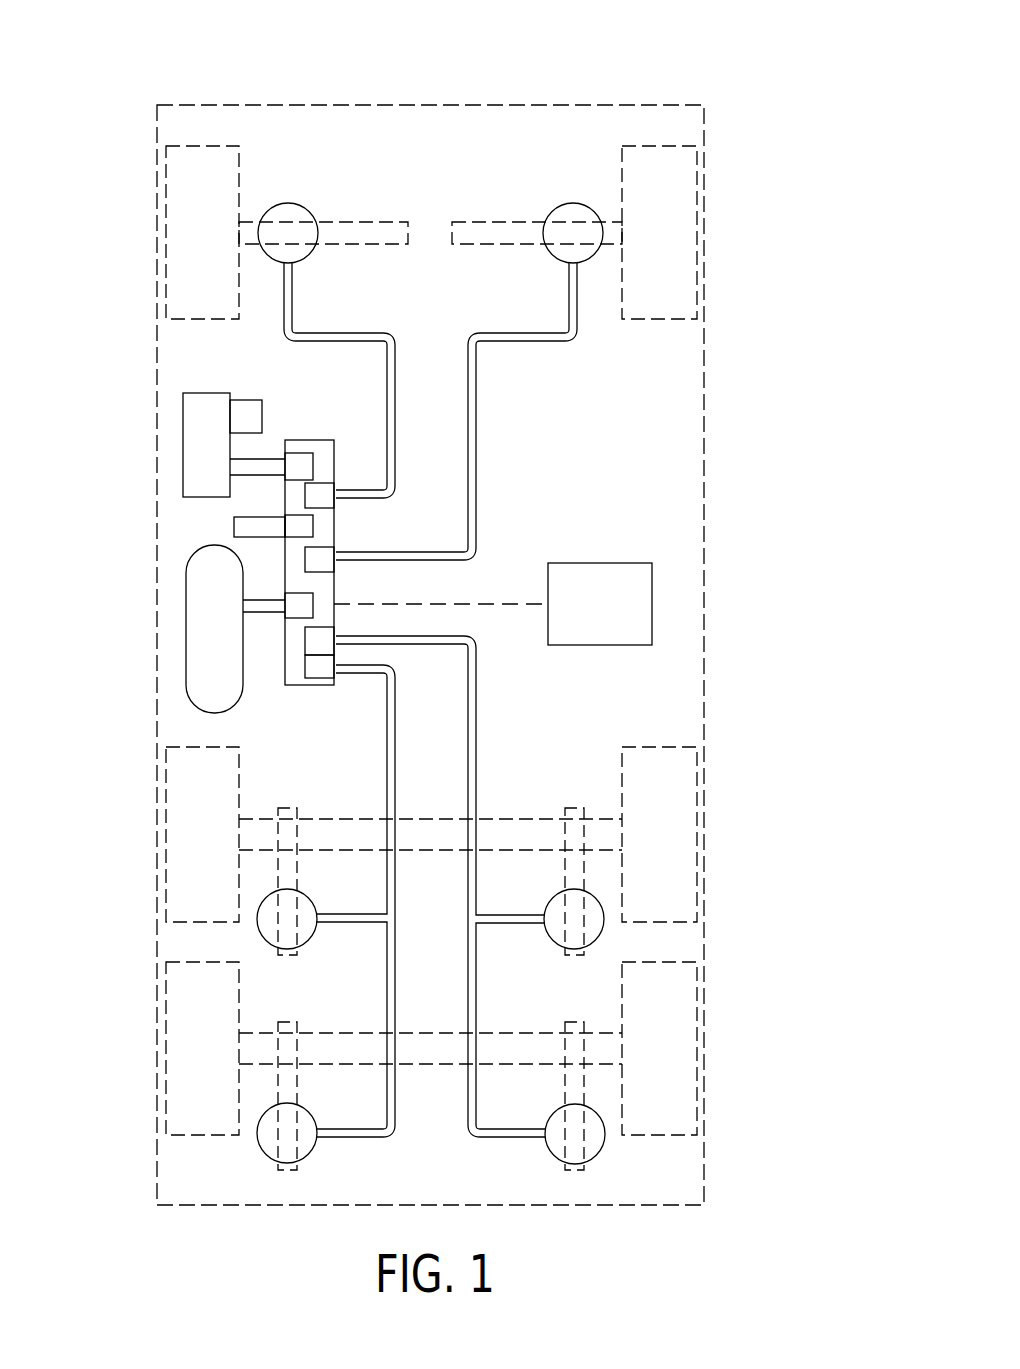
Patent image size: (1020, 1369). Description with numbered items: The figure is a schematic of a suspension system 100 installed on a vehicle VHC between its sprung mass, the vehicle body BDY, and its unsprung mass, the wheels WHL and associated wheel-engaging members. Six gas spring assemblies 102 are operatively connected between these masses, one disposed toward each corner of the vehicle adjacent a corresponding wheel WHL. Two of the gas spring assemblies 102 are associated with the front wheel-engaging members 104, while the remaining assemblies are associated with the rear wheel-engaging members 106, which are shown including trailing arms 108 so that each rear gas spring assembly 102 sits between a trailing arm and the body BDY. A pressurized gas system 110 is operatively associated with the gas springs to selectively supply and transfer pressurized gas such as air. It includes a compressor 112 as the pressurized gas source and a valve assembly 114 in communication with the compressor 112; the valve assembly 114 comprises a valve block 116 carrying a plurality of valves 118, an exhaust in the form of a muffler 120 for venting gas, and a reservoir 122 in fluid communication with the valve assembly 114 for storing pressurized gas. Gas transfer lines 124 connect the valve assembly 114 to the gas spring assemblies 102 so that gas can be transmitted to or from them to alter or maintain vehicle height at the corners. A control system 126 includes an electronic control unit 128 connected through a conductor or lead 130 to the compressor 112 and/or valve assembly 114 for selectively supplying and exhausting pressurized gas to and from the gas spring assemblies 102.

The suspension system 100 is at (432, 683).
The gas spring assemblies 102 is at (288, 201).
The front wheel-engaging members 104 is at (340, 246).
The rear wheel-engaging members 106 is at (330, 818).
The trailing arms 108 is at (298, 865).
The pressurized gas system 110 is at (245, 535).
The compressor 112 is at (193, 431).
The valve assembly 114 is at (347, 521).
The valve block 116 is at (347, 535).
The valves 118 is at (322, 553).
The muffler 120 is at (233, 523).
The reservoir 122 is at (193, 607).
The gas transfer lines 124 is at (373, 333).
The control system 126 is at (496, 565).
The electronic control unit 128 is at (600, 604).
The lead 130 is at (497, 602).
The vehicle body BDY is at (552, 102).
The vehicle VHC is at (717, 133).
The wheel WHL is at (178, 186).